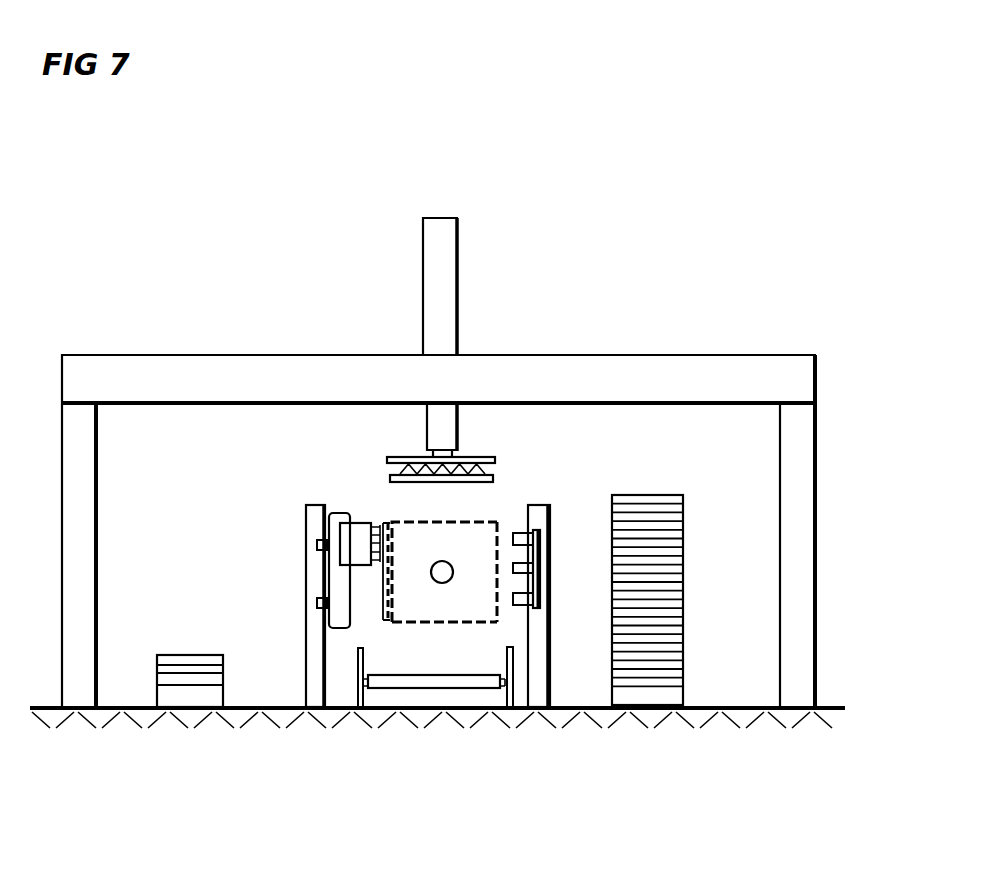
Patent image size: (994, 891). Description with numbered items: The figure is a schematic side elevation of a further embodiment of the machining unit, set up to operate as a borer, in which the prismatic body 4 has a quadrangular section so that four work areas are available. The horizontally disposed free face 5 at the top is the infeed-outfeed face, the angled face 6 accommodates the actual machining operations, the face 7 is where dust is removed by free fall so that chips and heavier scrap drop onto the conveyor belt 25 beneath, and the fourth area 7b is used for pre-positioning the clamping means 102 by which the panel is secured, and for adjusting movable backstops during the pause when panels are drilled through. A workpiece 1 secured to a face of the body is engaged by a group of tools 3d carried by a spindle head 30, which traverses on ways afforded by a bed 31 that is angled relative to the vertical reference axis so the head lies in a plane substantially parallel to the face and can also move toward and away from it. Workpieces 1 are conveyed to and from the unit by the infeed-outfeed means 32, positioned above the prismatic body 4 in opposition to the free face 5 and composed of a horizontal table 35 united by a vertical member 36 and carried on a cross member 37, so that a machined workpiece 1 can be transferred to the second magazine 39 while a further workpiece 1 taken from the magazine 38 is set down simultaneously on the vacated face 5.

The workpiece 1 is at (173, 660).
The group of tools 3d is at (357, 537).
The prismatic body 4 is at (373, 590).
The first face 5 is at (488, 515).
The second face 6 is at (505, 603).
The third face 7 is at (470, 632).
The fourth work area 7b is at (385, 632).
The conveyor belt 25 is at (430, 690).
The spindle head 30 is at (332, 532).
The bed 31 is at (316, 670).
The infeed-outfeed means 32 is at (440, 308).
The horizontal table 35 is at (392, 457).
The vertical member 36 is at (449, 232).
The frame beam 37 is at (748, 368).
The magazine 38 is at (693, 617).
The second magazine 39 is at (147, 693).
The clamping means 102 is at (507, 530).